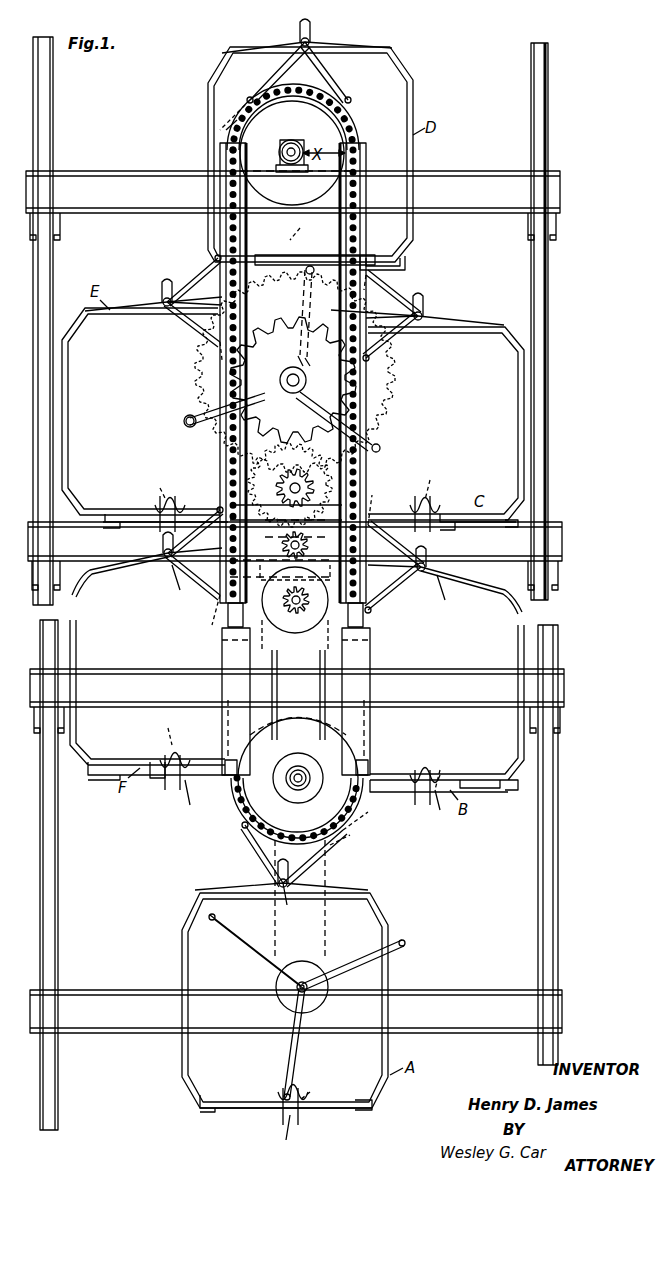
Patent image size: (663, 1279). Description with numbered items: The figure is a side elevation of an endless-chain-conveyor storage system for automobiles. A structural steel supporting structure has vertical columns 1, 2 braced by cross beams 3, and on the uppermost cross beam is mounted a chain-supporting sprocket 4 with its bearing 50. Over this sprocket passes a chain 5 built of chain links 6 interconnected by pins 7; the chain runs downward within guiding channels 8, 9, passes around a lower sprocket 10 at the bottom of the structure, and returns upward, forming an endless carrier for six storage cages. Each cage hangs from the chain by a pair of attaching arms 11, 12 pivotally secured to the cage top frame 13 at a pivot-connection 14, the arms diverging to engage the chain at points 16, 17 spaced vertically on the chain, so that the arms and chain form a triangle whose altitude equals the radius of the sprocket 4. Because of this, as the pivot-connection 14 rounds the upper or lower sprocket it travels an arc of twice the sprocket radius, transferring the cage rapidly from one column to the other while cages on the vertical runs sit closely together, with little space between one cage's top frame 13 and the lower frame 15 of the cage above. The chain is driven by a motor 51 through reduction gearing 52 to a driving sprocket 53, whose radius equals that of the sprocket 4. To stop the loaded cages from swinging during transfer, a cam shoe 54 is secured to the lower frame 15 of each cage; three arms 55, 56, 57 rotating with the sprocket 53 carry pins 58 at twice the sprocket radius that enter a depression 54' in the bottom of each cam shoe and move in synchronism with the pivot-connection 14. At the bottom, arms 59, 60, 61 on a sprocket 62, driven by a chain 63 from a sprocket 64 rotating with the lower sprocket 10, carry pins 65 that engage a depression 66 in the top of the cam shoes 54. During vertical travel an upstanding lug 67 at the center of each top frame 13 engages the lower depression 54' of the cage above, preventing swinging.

The vertical column 1 is at (549, 355).
The vertical column 2 is at (33, 360).
The cross beam 3 is at (560, 190).
The chain-supporting sprocket 4 is at (312, 200).
The chain 5 is at (352, 120).
The chain link 6 is at (244, 112).
The pin 7 is at (238, 120).
The guiding channel 8 is at (366, 228).
The guiding channel 9 is at (218, 226).
The lower sprocket 10 is at (350, 730).
The attaching arm 11 is at (270, 72).
The attaching arm 12 is at (325, 72).
The top frame 13 is at (330, 42).
The pivot-connection 14 is at (305, 42).
The lower frame 15 is at (228, 1097).
The engagement point 16 is at (352, 97).
The engagement point 17 is at (240, 85).
The bearing 50 is at (291, 140).
The motor 51 is at (305, 632).
The reduction gearing 52 is at (340, 520).
The sprocket 53 is at (293, 395).
The cam shoe 54 is at (292, 691).
The depression 54' is at (316, 857).
The arm 55 is at (372, 440).
The arm 56 is at (304, 300).
The arm 57 is at (198, 418).
The pin 58 is at (305, 272).
The arm 59 is at (350, 958).
The arm 60 is at (262, 952).
The arm 61 is at (300, 1060).
The sprocket 62 is at (320, 998).
The chain 63 is at (340, 852).
The sprocket 64 is at (302, 790).
The pin 65 is at (212, 922).
The depression 66 is at (302, 661).
The upstanding lug 67 is at (300, 30).